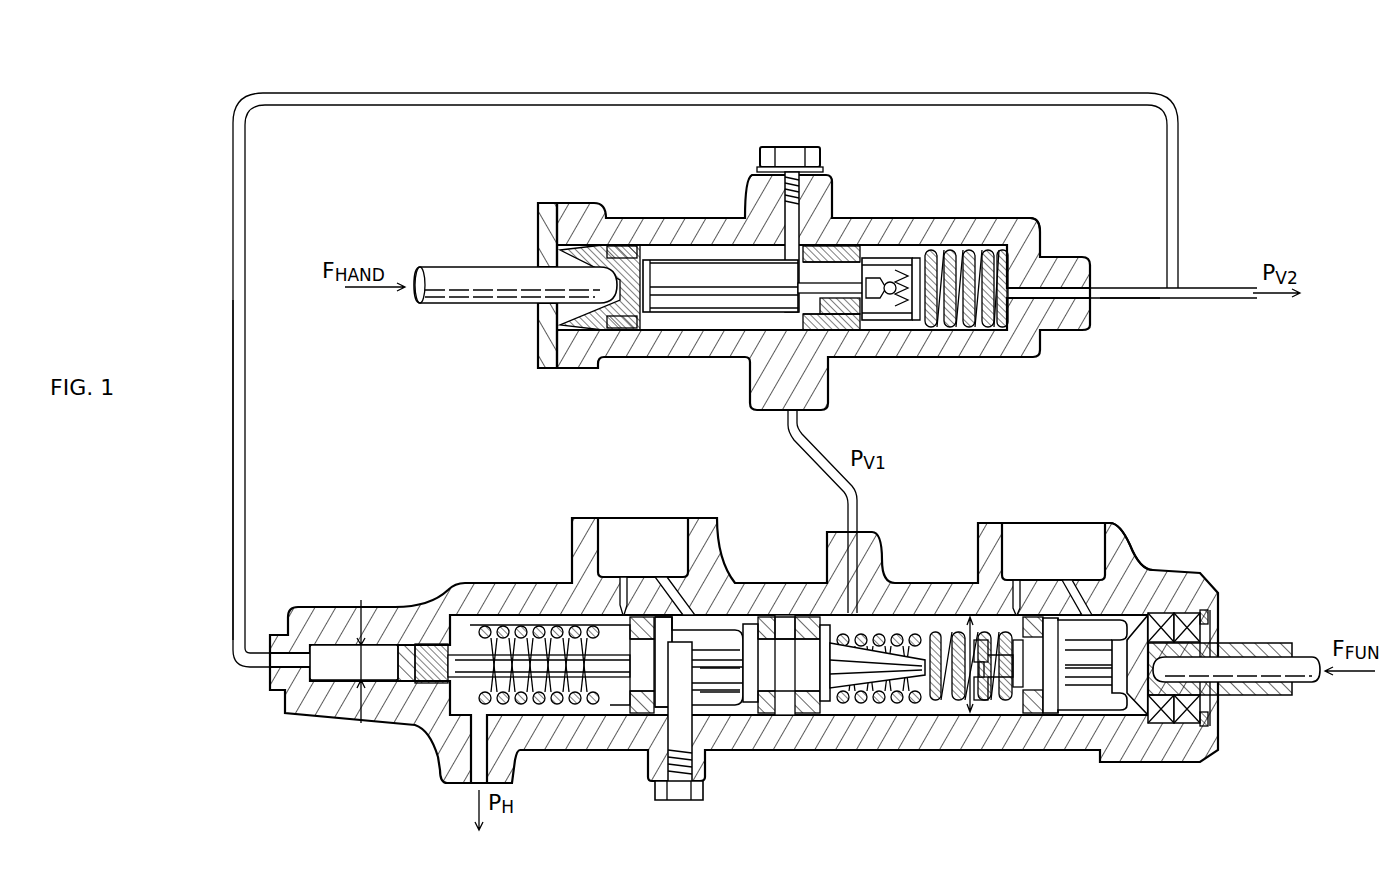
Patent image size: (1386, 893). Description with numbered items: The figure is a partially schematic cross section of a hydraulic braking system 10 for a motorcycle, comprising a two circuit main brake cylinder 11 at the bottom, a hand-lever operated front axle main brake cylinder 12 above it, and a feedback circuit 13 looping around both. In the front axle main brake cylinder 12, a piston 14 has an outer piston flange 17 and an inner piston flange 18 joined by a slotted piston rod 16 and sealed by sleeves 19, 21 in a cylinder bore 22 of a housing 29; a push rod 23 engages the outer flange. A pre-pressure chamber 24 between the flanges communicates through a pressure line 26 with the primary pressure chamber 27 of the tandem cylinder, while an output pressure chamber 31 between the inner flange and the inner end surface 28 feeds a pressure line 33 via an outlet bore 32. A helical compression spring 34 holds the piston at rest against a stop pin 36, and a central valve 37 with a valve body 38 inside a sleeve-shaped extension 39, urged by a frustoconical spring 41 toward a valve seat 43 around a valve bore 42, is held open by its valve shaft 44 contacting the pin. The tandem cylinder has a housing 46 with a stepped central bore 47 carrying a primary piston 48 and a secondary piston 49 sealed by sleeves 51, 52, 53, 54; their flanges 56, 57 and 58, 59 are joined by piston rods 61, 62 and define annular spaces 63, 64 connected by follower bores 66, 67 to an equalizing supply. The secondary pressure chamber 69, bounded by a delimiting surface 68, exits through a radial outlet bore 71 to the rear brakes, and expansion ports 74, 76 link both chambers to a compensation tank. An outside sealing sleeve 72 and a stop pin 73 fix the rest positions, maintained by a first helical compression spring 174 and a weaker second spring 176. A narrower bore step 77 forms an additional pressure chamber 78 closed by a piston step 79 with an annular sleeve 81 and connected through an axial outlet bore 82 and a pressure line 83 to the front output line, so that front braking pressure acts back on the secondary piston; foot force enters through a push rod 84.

The hydraulic braking system 10 is at (1190, 258).
The two circuit main brake cylinder 11 is at (942, 583).
The front axle main brake cylinder 12 is at (720, 360).
The feedback circuit 13 is at (250, 466).
The piston 14 is at (693, 260).
The slotted piston rod 16 is at (700, 332).
The outer piston flange 17 is at (625, 245).
The inner piston flange 18 is at (832, 245).
The sleeve 19 is at (623, 330).
The sleeve 21 is at (860, 330).
The cylinder bore 22 is at (935, 250).
The push rod 23 is at (452, 268).
The pre-pressure chamber 24 is at (668, 246).
The pressure line 26 is at (790, 450).
The primary pressure chamber 27 is at (975, 640).
The inner end surface 28 is at (1040, 245).
The housing 29 is at (985, 220).
The output pressure chamber 31 is at (1005, 330).
The outlet bore 32 is at (1082, 288).
The pressure line 33 is at (1125, 300).
The helical compression spring 34 is at (1000, 330).
The stop pin 36 is at (786, 260).
The central valve 37 is at (940, 332).
The valve body 38 is at (874, 278).
The sleeve-shaped extension 39 is at (890, 265).
The frustoconical spring 41 is at (918, 258).
The valve bore 42 is at (835, 332).
The valve seat 43 is at (868, 258).
The valve shaft 44 is at (905, 320).
The housing 46 is at (1135, 565).
The central bore 47 is at (742, 635).
The primary piston 48 is at (1075, 710).
The secondary piston 49 is at (752, 705).
The sleeve 51 is at (1030, 580).
The sleeve 52 is at (840, 705).
The sleeve 53 is at (790, 713).
The sleeve 54 is at (642, 713).
The inner flange 56 is at (1035, 713).
The outer piston flange 57 is at (1178, 723).
The outer piston flange 58 is at (620, 713).
The flange 59 is at (788, 615).
The piston rod 61 is at (1100, 710).
The piston rod 62 is at (722, 705).
The annular space 63 is at (1140, 705).
The annular space 64 is at (712, 710).
The follower bore 66 is at (1068, 580).
The follower bore 67 is at (660, 577).
The delimiting surface 68 is at (490, 625).
The secondary pressure chamber 69 is at (530, 715).
The radial outlet bore 71 is at (465, 778).
The outside sealing sleeve 72 is at (1160, 613).
The stop pin 73 is at (700, 620).
The expansion port 74 is at (1016, 580).
The expansion port 76 is at (622, 577).
The narrower bore step 77 is at (340, 645).
The additional pressure chamber 78 is at (390, 684).
The piston step 79 is at (435, 644).
The annular sleeve 81 is at (407, 645).
The axial outlet bore 82 is at (278, 650).
The pressure line 83 is at (246, 508).
The push rod 84 is at (1255, 657).
The first helical compression spring 174 is at (540, 625).
The second helical compression spring 176 is at (915, 705).